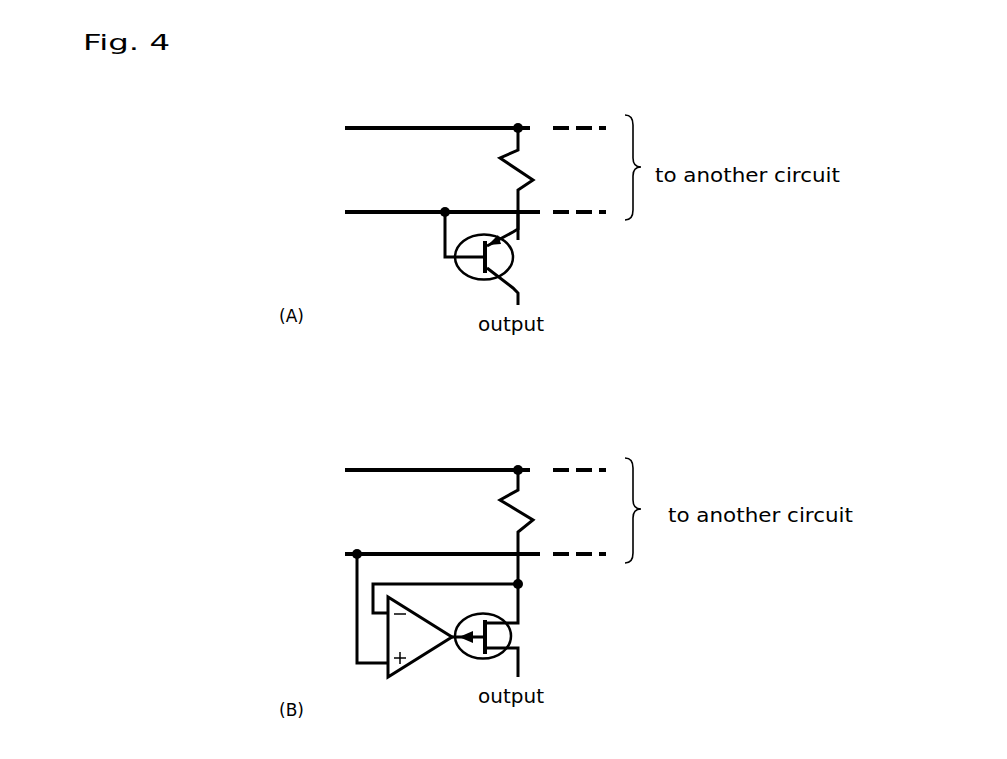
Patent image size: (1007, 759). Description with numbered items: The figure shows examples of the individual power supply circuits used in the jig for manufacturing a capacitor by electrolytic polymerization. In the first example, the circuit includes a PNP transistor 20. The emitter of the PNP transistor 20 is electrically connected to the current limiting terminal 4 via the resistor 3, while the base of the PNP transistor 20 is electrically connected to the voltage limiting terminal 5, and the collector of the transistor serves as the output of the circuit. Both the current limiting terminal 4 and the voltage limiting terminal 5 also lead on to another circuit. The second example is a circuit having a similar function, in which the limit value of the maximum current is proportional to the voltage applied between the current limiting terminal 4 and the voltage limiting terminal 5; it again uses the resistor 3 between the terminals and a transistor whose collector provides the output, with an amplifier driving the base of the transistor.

The resistor 3 is at (518, 170).
The current limiting terminal 4 is at (316, 297).
The voltage limiting terminal 5 is at (316, 382).
The PNP transistor 20 is at (546, 260).